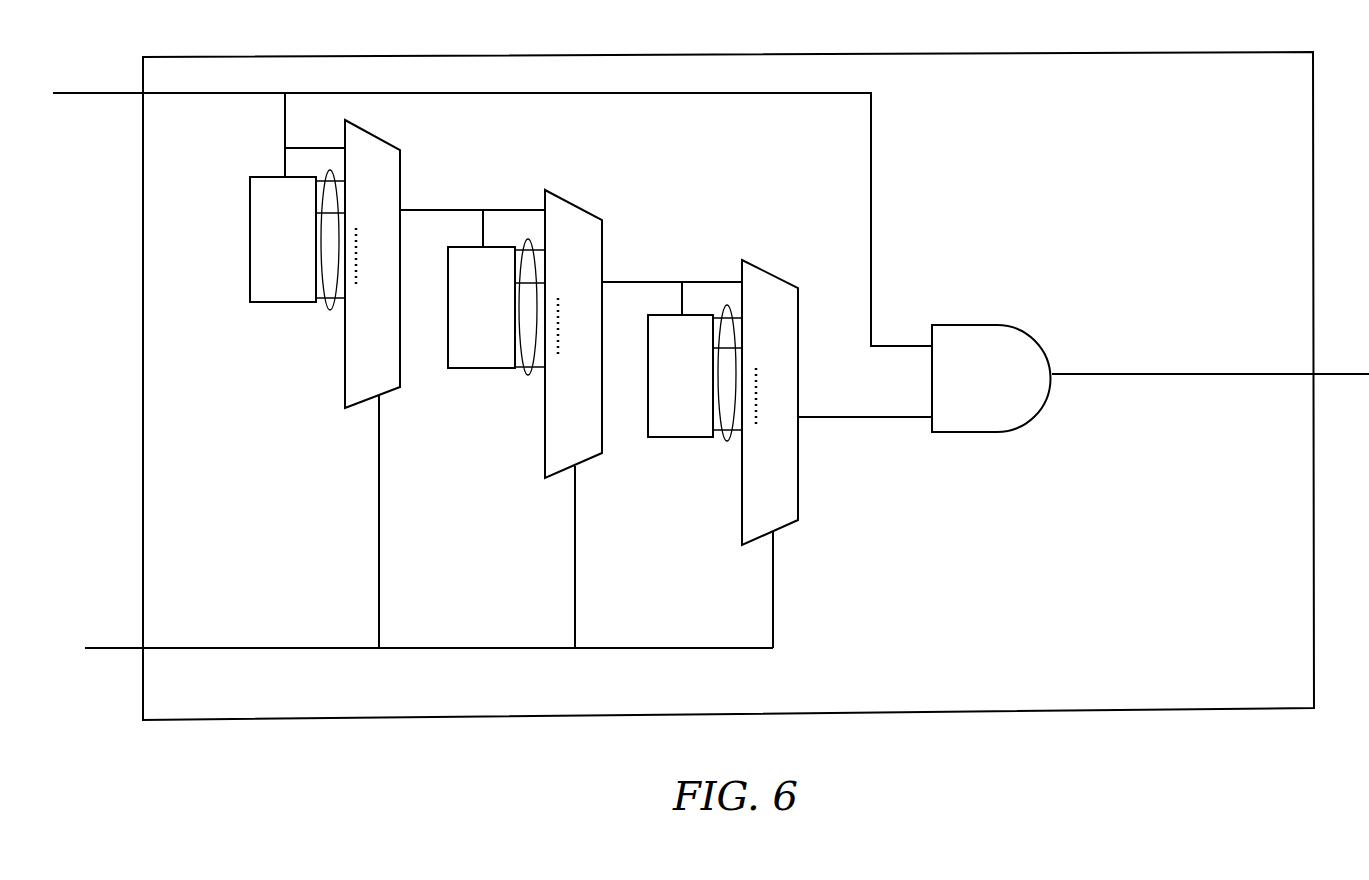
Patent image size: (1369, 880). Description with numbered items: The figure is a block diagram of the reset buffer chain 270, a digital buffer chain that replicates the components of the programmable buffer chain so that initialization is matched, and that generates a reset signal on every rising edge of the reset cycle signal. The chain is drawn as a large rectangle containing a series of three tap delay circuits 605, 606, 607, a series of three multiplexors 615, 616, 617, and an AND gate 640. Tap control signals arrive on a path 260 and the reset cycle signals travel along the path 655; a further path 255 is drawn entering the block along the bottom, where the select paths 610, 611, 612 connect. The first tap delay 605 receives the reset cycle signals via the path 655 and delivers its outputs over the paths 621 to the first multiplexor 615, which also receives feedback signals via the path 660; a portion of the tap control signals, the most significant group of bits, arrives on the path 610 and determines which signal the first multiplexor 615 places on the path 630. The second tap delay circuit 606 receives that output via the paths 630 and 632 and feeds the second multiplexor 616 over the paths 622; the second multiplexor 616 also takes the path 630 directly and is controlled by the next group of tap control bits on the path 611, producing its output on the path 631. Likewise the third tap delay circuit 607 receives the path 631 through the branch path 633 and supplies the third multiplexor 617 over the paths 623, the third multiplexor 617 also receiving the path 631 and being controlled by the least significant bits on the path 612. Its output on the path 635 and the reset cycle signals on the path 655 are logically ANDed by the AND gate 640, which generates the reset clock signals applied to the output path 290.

The select signal line 255 is at (123, 646).
The path 260 is at (78, 92).
The reset buffer chain 270 is at (330, 57).
The path 290 is at (1245, 373).
The first tap delay 605 is at (297, 239).
The second tap delay circuit 606 is at (496, 307).
The third tap delay circuit 607 is at (695, 376).
The path 610 is at (380, 517).
The path 611 is at (576, 577).
The path 612 is at (774, 600).
The first multiplexor 615 is at (389, 395).
The second multiplexor 616 is at (582, 206).
The third multiplexor 617 is at (771, 266).
The paths 621 is at (331, 308).
The paths 622 is at (528, 376).
The paths 623 is at (727, 444).
The path 630 is at (441, 209).
The path 631 is at (645, 281).
The path 632 is at (482, 230).
The path 633 is at (681, 298).
The path 635 is at (838, 417).
The AND gate 640 is at (1043, 346).
The path 655 is at (282, 133).
The path 660 is at (305, 147).